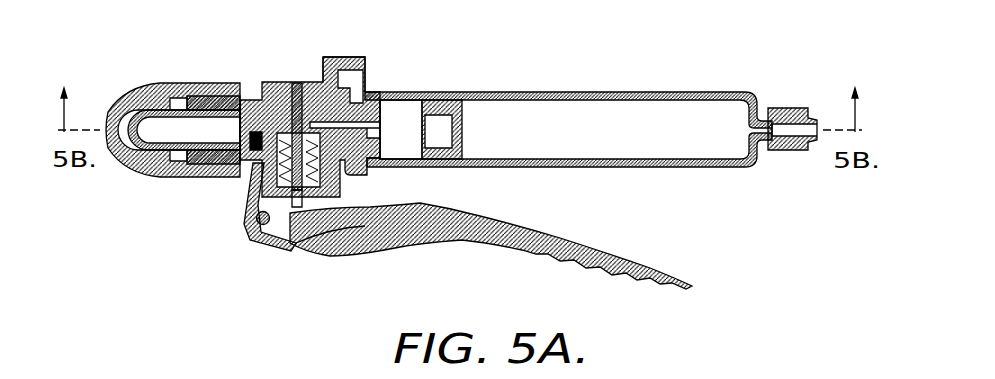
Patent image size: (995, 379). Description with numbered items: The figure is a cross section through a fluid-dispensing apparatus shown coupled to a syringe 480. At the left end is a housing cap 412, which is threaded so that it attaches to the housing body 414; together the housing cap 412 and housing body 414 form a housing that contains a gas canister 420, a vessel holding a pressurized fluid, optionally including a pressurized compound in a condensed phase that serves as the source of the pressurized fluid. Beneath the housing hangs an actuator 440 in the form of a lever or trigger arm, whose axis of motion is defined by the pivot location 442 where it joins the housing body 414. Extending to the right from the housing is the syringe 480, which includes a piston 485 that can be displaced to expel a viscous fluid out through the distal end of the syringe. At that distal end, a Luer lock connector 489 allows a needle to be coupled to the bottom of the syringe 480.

The housing cap 412 is at (132, 158).
The housing body 414 is at (352, 57).
The gas canister 420 is at (183, 152).
The actuator 440 is at (330, 243).
The pivot location 442 is at (270, 226).
The syringe 480 is at (396, 92).
The piston 485 is at (448, 97).
The Luer lock connector 489 is at (785, 108).